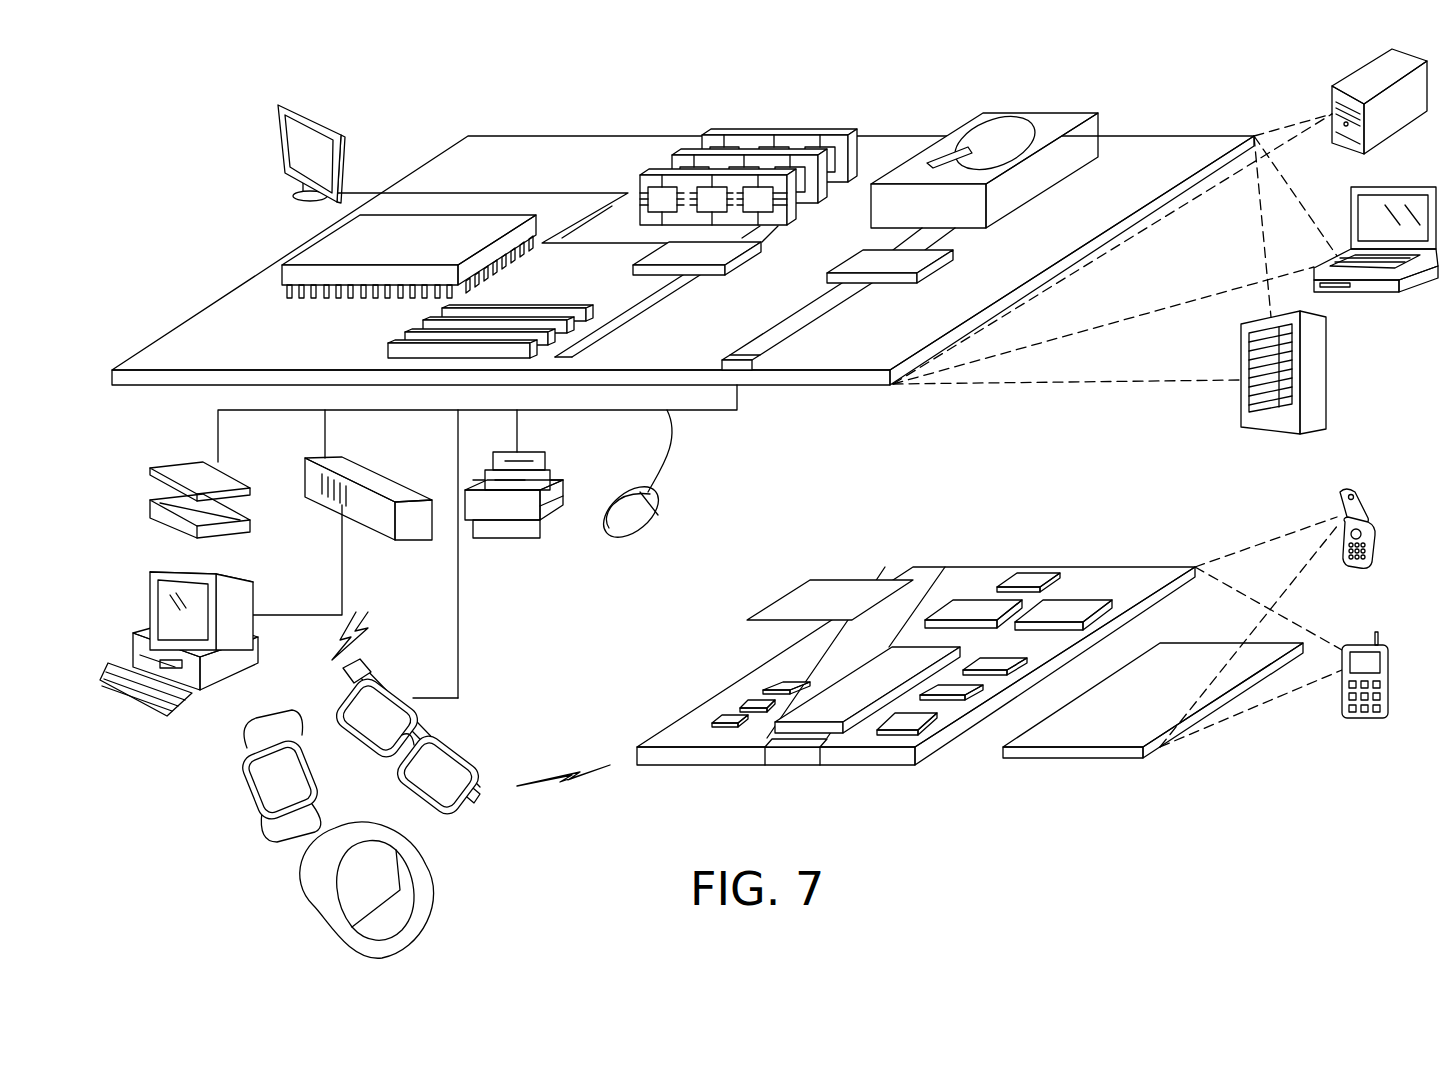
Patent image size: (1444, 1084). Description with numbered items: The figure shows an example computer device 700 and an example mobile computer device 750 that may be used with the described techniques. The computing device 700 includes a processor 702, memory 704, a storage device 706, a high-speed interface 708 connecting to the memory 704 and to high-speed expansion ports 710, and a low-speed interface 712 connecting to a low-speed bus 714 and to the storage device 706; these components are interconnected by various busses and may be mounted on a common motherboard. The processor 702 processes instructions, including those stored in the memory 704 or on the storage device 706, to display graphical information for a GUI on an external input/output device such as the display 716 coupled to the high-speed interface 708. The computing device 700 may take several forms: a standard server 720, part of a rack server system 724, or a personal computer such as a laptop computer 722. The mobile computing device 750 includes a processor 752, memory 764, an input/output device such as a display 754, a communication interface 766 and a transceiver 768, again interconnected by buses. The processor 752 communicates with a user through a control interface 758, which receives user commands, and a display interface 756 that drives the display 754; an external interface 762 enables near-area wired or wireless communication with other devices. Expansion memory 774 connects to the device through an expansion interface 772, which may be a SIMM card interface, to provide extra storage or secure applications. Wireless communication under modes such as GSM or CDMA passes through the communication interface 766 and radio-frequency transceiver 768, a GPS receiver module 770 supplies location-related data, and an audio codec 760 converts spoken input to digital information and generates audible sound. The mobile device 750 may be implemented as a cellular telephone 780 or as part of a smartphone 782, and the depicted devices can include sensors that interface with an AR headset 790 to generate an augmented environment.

The computer device 700 is at (418, 80).
The processor 702 is at (307, 244).
The memory 704 is at (783, 129).
The storage device 706 is at (1029, 112).
The high-speed interface 708 is at (712, 253).
The high-speed expansion ports 710 is at (412, 326).
The low-speed interface 712 is at (863, 258).
The low-speed bus 714 is at (743, 354).
The display 716 is at (282, 104).
The standard server 720 is at (1355, 81).
The laptop computer 722 is at (1414, 189).
The rack server system 724 is at (1329, 371).
The mobile computer device 750 is at (686, 652).
The processor 752 is at (835, 694).
The display 754 is at (1193, 654).
The display interface 756 is at (922, 718).
The control interface 758 is at (957, 693).
The audio codec 760 is at (1000, 657).
The external interface 762 is at (793, 750).
The memory 764 is at (740, 698).
The communication interface 766 is at (973, 603).
The transceiver 768 is at (1073, 603).
The GPS receiver module 770 is at (1032, 573).
The expansion interface 772 is at (893, 581).
The expansion memory 774 is at (807, 582).
The cellular telephone 780 is at (1352, 488).
The smartphone 782 is at (1358, 645).
The AR headset/HMD device 790 is at (466, 824).